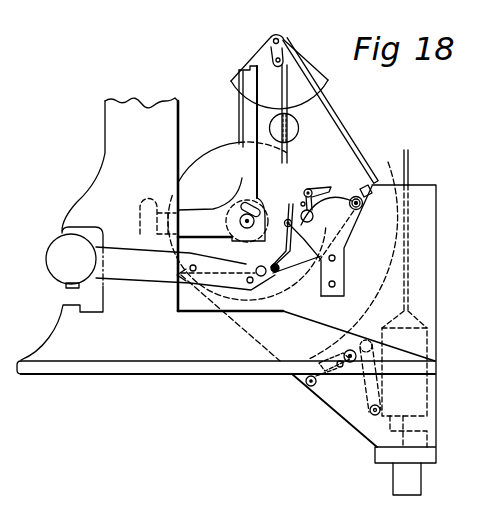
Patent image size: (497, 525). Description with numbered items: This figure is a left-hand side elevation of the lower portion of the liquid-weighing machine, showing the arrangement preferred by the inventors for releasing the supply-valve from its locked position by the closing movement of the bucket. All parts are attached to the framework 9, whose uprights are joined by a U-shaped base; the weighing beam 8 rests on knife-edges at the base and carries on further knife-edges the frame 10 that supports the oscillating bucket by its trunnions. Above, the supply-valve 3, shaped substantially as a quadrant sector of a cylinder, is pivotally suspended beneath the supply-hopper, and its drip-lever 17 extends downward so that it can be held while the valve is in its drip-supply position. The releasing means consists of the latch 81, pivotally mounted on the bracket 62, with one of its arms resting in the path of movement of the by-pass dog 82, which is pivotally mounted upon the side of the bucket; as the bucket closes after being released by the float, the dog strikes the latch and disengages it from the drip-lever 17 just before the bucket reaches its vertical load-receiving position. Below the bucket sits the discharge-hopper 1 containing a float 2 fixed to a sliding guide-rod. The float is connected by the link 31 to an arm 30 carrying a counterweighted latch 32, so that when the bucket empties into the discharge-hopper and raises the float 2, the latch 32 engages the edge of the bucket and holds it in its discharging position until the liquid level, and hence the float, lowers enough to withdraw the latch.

The discharge-hopper 1 is at (423, 263).
The float 2 is at (410, 392).
The supply-valve 3 is at (228, 79).
The beam 8 is at (147, 273).
The framework 9 is at (107, 141).
The frame 10 is at (242, 150).
The drip-lever 17 is at (331, 112).
The arm 30 is at (320, 373).
The link 31 is at (365, 385).
The counterweighted latch 32 is at (330, 356).
The bracket 62 is at (341, 248).
The latch 81 is at (351, 193).
The by-pass dog 82 is at (306, 188).